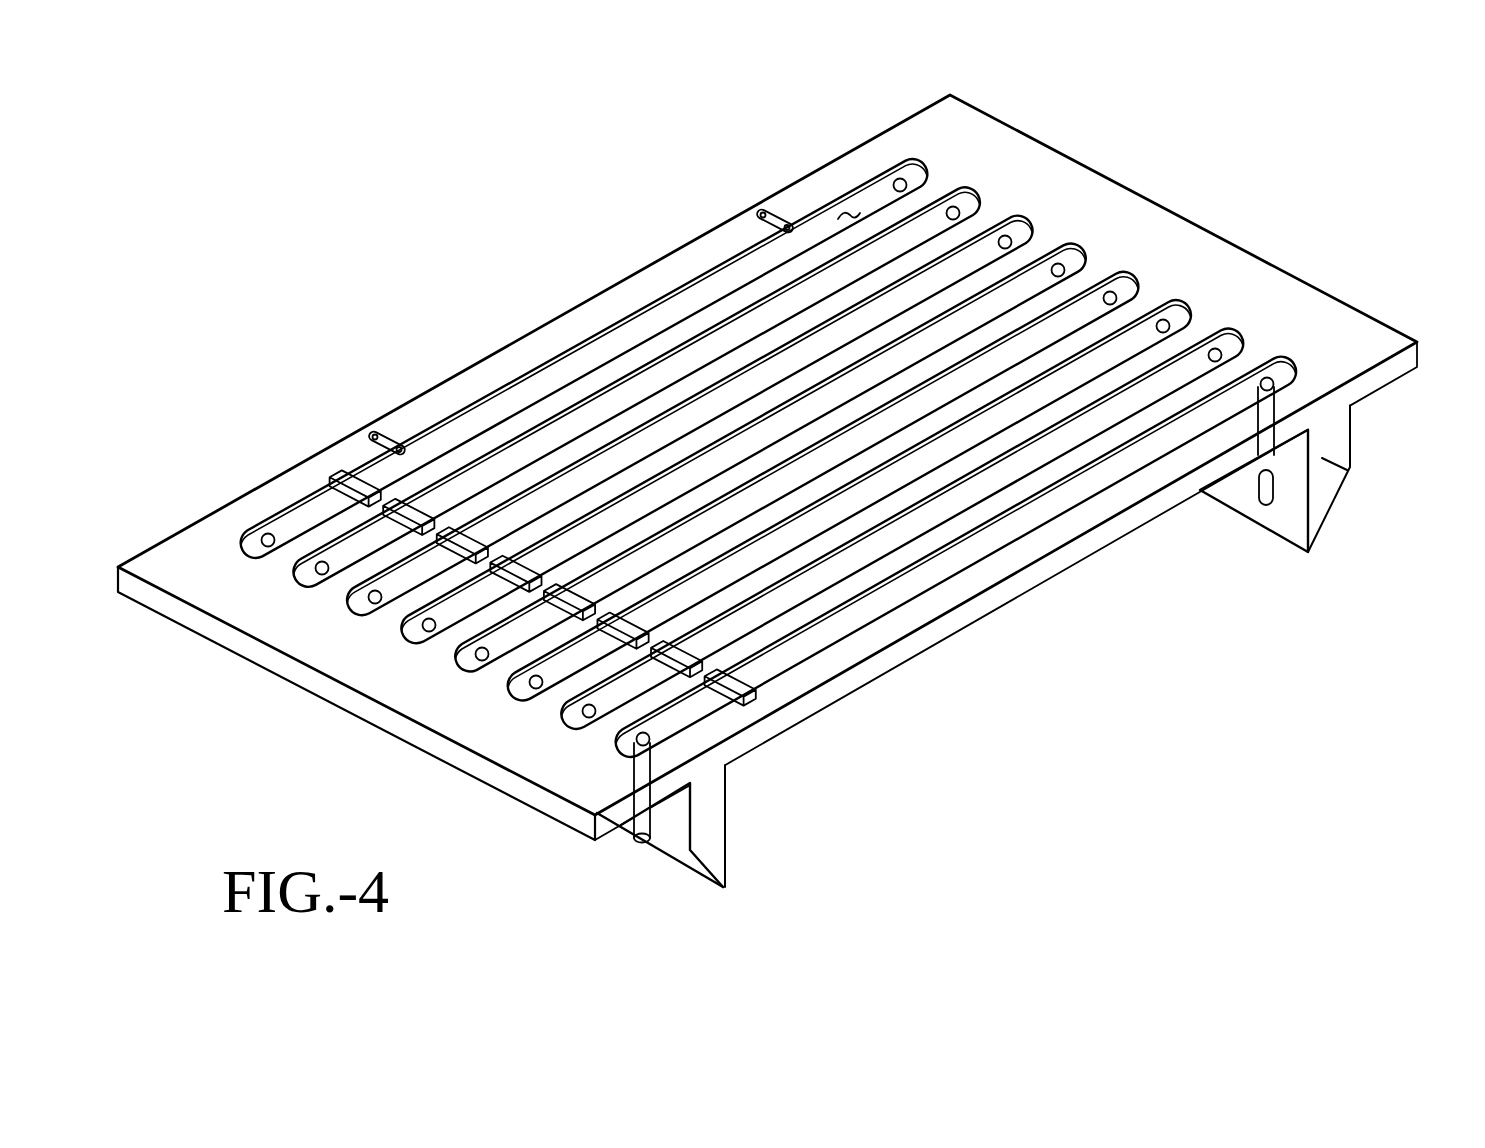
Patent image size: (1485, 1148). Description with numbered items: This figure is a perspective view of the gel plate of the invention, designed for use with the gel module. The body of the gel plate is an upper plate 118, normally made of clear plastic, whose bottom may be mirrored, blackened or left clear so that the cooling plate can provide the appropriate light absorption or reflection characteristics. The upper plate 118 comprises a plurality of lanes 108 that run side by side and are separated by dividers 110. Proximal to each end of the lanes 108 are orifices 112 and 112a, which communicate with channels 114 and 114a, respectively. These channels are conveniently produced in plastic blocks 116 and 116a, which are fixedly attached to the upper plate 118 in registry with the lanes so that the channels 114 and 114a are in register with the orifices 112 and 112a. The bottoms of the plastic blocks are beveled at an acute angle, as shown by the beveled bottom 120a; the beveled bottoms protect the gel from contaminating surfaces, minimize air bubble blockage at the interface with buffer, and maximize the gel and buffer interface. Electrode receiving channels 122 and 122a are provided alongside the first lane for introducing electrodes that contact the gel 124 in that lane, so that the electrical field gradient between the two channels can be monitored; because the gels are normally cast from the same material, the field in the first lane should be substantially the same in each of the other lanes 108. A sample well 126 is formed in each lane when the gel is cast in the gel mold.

The lanes 108 is at (972, 553).
The dividers 110 is at (1015, 257).
The orifice 112 is at (622, 718).
The orifice 112a is at (1266, 388).
The channel 114 is at (650, 763).
The channel 114a is at (1258, 440).
The plastic block 116 is at (712, 843).
The plastic block 116a is at (1285, 503).
The upper plate 118 is at (898, 652).
The beveled bottom 120a is at (1333, 507).
The electrode receiving channel 122 is at (372, 433).
The electrode receiving channel 122a is at (757, 213).
The gel 124 is at (850, 212).
The sample well 126 is at (340, 485).